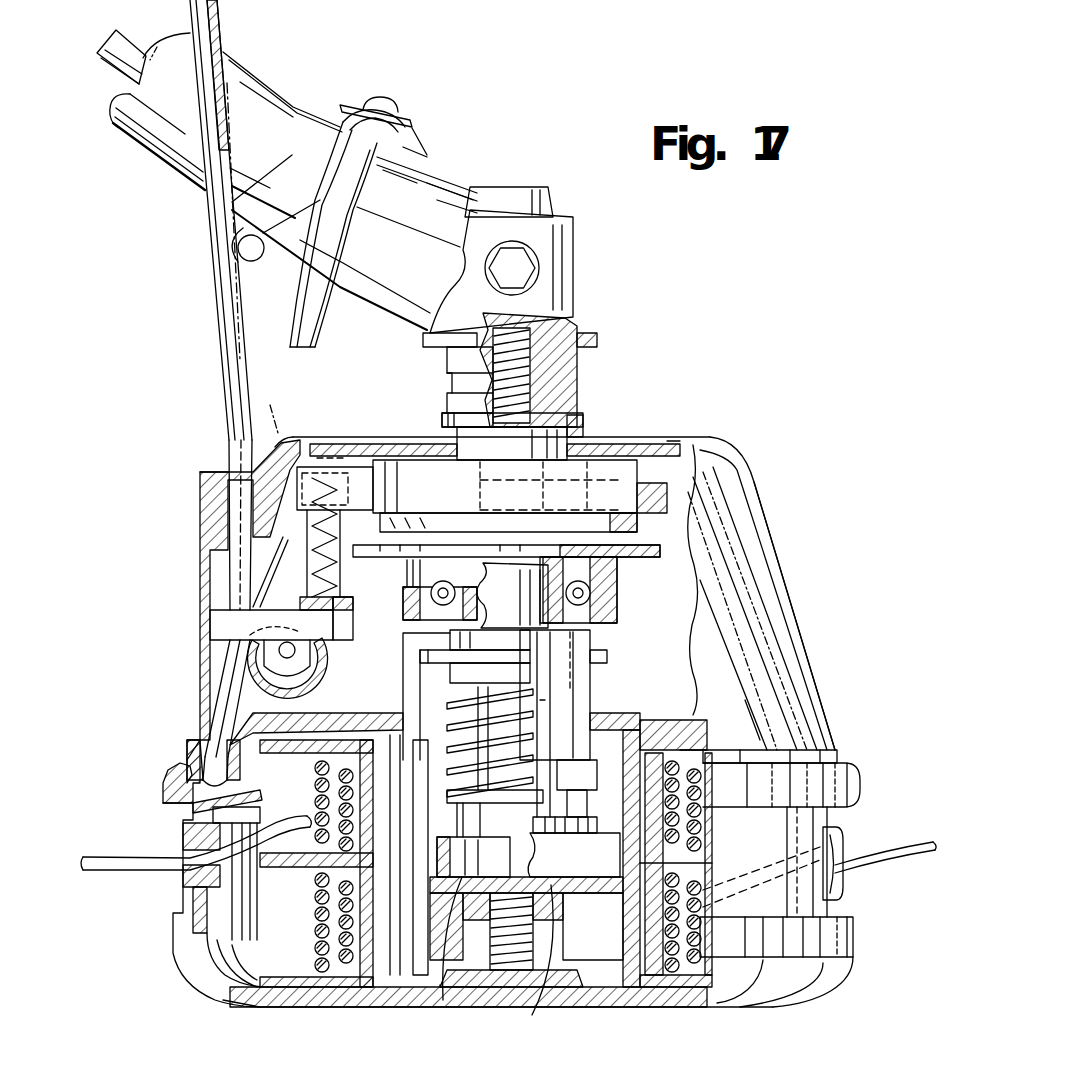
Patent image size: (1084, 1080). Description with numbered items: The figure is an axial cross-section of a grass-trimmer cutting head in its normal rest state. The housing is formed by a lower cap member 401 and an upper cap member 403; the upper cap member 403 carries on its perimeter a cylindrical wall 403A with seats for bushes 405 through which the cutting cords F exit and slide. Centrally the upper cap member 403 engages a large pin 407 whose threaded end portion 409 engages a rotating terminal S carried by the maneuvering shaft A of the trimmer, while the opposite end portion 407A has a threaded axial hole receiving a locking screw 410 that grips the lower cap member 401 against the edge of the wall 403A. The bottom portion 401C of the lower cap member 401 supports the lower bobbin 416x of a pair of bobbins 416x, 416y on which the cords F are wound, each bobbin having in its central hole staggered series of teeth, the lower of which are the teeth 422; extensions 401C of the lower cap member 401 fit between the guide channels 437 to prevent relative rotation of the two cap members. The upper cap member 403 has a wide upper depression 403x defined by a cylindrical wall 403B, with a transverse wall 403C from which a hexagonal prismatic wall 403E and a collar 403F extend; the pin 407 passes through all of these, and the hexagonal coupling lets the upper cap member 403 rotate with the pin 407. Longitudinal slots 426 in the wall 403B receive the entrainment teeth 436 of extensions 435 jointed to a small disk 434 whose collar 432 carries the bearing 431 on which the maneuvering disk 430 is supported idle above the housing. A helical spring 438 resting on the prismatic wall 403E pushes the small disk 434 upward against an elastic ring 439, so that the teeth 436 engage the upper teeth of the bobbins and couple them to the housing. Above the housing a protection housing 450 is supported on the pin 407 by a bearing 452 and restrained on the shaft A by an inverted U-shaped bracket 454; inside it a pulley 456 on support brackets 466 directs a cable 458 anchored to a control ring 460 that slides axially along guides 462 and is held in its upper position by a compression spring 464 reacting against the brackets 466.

The maneuvering shaft A is at (280, 100).
The rotating terminal S is at (580, 330).
The cutting cord F is at (135, 860).
The lower cap member 401 is at (190, 965).
The bottom portion / extensions of lower cap member 401C is at (225, 995).
The upper cap member 403 is at (170, 780).
The cylindrical wall 403A is at (195, 910).
The cylindrical wall 403B is at (598, 864).
The transverse wall 403C is at (597, 895).
The prismatic wall 403E is at (448, 832).
The collar 403F is at (440, 985).
The upper depression 403x is at (734, 709).
The bush 405 is at (185, 883).
The pin 407 is at (585, 655).
The end portion of pin 407A is at (511, 965).
The threaded end portion 409 is at (567, 385).
The locking screw 410 is at (482, 988).
The lower bobbin 416x is at (305, 870).
The upper bobbin 416y is at (688, 853).
The teeth 422 is at (602, 835).
The longitudinal slot 426 is at (380, 725).
The maneuvering disk 430 is at (663, 557).
The bearing 431 is at (614, 595).
The collar 432 is at (612, 545).
The small disk 434 is at (412, 653).
The extension 435 is at (590, 640).
The entrainment teeth 436 is at (595, 758).
The guide channel 437 is at (395, 985).
The helical spring 438 is at (545, 700).
The elastic ring 439 is at (447, 535).
The protection housing 450 is at (712, 460).
The bearing 452 is at (627, 490).
The inverted U-shaped bracket 454 is at (306, 345).
The pulley 456 is at (245, 670).
The cable 458 is at (213, 25).
The control ring 460 is at (663, 480).
The guide 462 is at (307, 565).
The compression spring 464 is at (205, 527).
The support bracket 466 is at (435, 665).